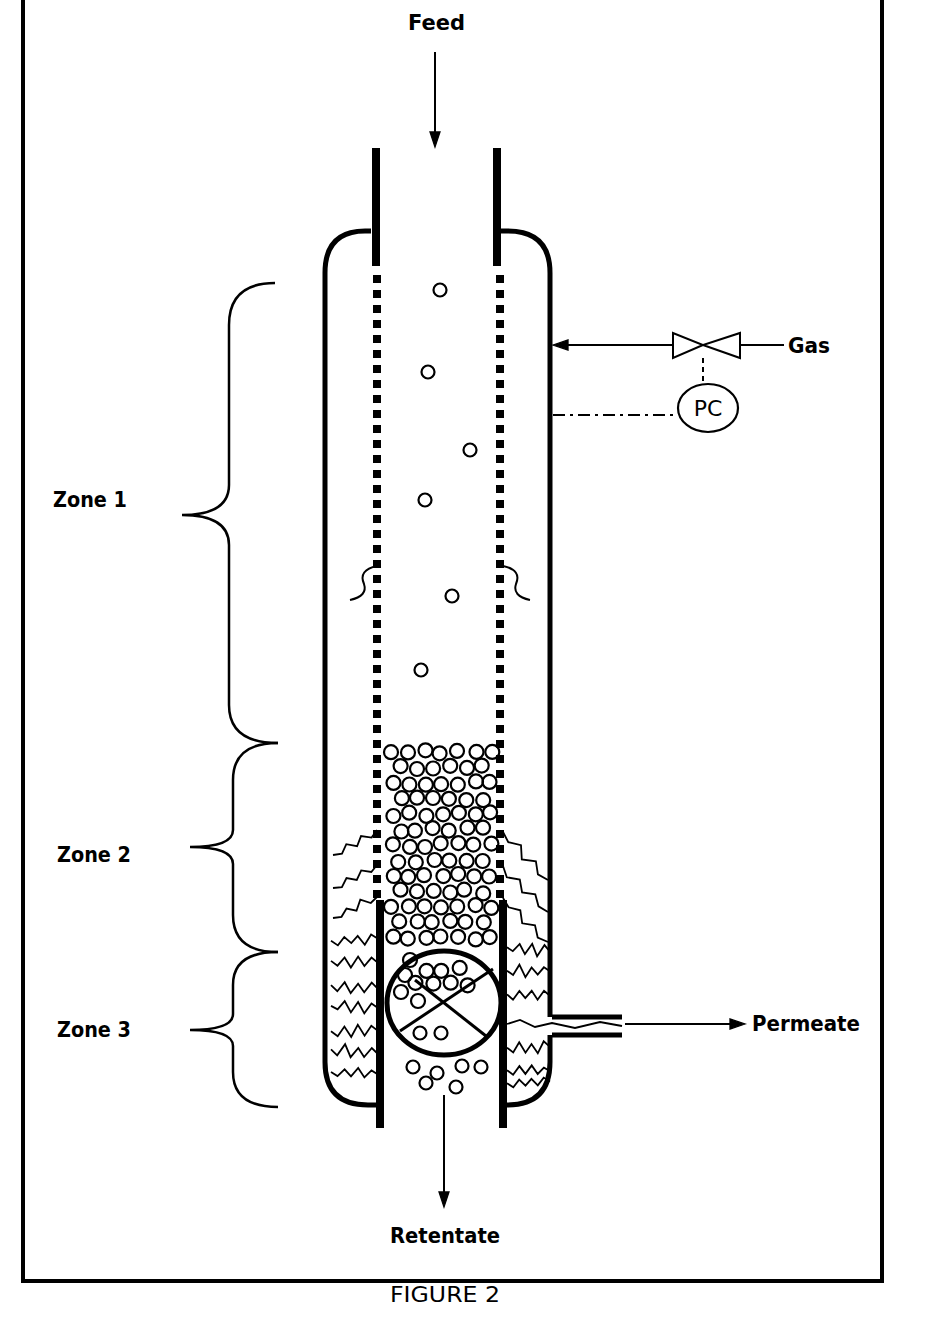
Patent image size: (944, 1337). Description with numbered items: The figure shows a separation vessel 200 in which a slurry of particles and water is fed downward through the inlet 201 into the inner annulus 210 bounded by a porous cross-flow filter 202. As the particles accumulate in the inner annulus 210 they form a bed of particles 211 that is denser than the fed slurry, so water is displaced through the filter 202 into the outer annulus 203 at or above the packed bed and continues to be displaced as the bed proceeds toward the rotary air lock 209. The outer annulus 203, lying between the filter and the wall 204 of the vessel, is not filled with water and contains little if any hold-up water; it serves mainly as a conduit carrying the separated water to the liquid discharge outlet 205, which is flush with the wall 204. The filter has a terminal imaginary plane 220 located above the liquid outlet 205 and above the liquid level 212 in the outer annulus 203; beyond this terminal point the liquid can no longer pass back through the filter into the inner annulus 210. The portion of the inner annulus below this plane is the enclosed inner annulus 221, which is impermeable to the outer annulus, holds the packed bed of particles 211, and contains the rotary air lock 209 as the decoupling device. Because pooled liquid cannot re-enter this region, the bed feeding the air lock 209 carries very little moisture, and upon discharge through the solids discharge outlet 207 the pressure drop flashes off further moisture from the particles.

The separation vessel 200 is at (109, 84).
The inlet 201 is at (518, 177).
The cross-flow filter 202 is at (515, 539).
The outer annulus 203 is at (527, 566).
The wall 204 is at (570, 596).
The liquid discharge outlet 205 is at (625, 1005).
The solids discharge outlet 207 is at (528, 1067).
The rotary air lock 209 is at (386, 1050).
The inner annulus 210 is at (470, 516).
The bed of particles 211 is at (478, 917).
The liquid level 212 is at (547, 998).
The terminal imaginary plane 220 is at (115, 883).
The enclosed inner annulus 221 is at (353, 926).